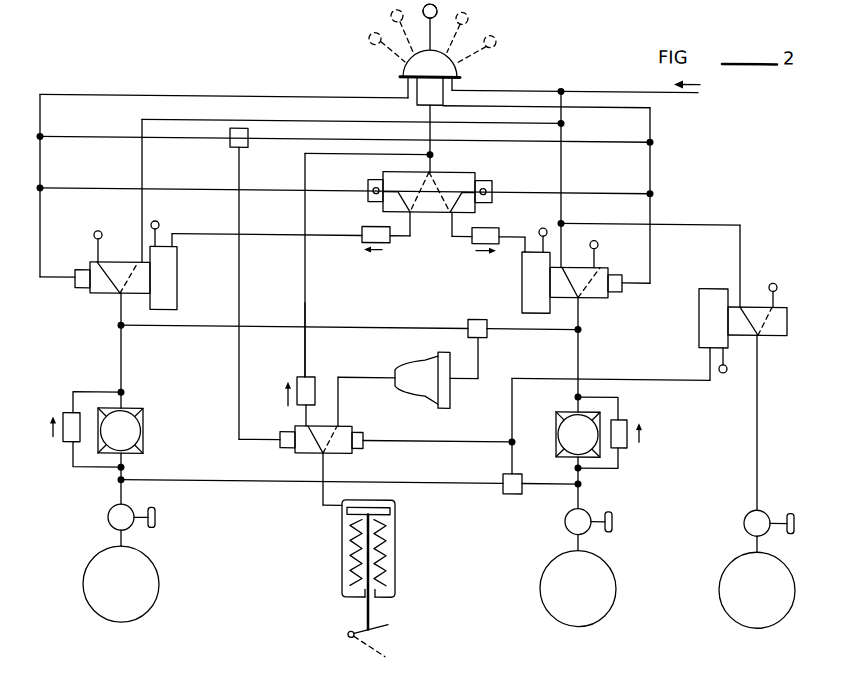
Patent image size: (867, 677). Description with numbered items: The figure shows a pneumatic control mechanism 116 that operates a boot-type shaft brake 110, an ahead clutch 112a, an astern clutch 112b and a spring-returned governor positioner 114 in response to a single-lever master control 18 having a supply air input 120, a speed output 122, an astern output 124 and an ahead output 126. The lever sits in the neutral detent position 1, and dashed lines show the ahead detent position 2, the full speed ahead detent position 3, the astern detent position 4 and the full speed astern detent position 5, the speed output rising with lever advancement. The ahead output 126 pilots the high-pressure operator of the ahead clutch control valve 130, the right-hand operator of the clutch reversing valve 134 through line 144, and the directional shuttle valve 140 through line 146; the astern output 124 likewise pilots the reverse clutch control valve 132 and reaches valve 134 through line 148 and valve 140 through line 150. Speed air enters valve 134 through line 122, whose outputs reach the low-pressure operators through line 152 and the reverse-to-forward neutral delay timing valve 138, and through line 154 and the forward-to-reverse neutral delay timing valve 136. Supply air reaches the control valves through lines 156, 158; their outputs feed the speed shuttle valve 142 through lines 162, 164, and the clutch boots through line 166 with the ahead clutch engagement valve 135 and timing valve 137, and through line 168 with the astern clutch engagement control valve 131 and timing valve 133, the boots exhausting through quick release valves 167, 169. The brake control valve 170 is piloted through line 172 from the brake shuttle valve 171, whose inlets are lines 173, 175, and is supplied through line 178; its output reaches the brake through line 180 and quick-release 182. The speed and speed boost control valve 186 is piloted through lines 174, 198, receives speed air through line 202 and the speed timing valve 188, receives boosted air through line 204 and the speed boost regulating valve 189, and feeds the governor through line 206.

The neutral detent position 1 is at (421, 15).
The ahead detent position 2 is at (467, 29).
The full speed ahead detent position 3 is at (494, 27).
The astern detent position 4 is at (390, 28).
The full speed astern detent position 5 is at (370, 35).
The master control 18 is at (478, 64).
The air-operated boot-type brake 110 is at (788, 606).
The ahead clutch 112a is at (611, 601).
The astern clutch 112b is at (154, 602).
The governor positioner 114 is at (395, 556).
The control mechanism 116 is at (726, 143).
The supply air input 120 is at (528, 82).
The speed output 122 is at (430, 106).
The astern output 124 is at (216, 92).
The ahead output 126 is at (609, 101).
The ahead clutch control valve 130 is at (596, 260).
The astern clutch engagement control valve 131 is at (141, 408).
The reverse clutch control valve 132 is at (123, 259).
The astern clutch engagement timing valve 133 is at (64, 411).
The clutch reversing valve 134 is at (429, 209).
The ahead clutch engagement valve 135 is at (600, 406).
The forward-to-reverse neutral delay timing valve 136 is at (365, 221).
The ahead clutch engagement timing valve 137 is at (628, 416).
The reverse-to-forward neutral delay timing valve 138 is at (485, 221).
The directional shuttle valve 140 is at (248, 144).
The speed shuttle valve 142 is at (470, 313).
The line 144 is at (588, 188).
The line 146 is at (500, 137).
The line 148 is at (305, 209).
The line 150 is at (210, 134).
The line 152 is at (488, 247).
The line 154 is at (278, 233).
The line 156 is at (563, 160).
The line 158 is at (142, 200).
The line 162 is at (534, 326).
The line 164 is at (344, 322).
The line 166 is at (580, 341).
The quick release valve 167 is at (587, 503).
The line 168 is at (122, 350).
The quick release valve 169 is at (112, 506).
The brake control valve 170 is at (787, 317).
The brake shuttle valve 171 is at (510, 490).
The line 172 is at (512, 395).
The line 173 is at (566, 478).
The line 174 is at (238, 391).
The line 175 is at (437, 481).
The line 178 is at (742, 236).
The line 180 is at (758, 423).
The quick-release 182 is at (768, 503).
The speed and speed boost control valve 186 is at (295, 451).
The speed timing valve 188 is at (316, 374).
The speed boost regulating valve 189 is at (416, 399).
The line 198 is at (413, 441).
The line 202 is at (304, 343).
The line 204 is at (367, 376).
The line 206 is at (328, 502).